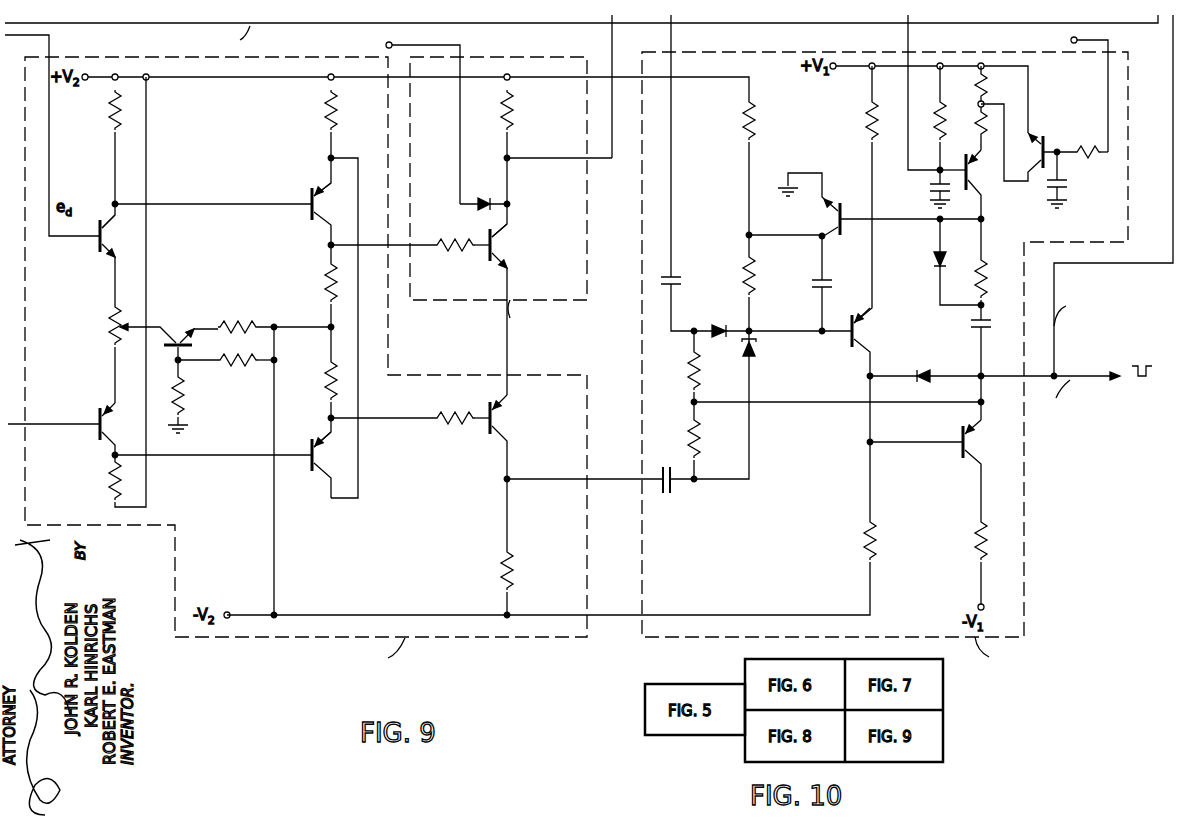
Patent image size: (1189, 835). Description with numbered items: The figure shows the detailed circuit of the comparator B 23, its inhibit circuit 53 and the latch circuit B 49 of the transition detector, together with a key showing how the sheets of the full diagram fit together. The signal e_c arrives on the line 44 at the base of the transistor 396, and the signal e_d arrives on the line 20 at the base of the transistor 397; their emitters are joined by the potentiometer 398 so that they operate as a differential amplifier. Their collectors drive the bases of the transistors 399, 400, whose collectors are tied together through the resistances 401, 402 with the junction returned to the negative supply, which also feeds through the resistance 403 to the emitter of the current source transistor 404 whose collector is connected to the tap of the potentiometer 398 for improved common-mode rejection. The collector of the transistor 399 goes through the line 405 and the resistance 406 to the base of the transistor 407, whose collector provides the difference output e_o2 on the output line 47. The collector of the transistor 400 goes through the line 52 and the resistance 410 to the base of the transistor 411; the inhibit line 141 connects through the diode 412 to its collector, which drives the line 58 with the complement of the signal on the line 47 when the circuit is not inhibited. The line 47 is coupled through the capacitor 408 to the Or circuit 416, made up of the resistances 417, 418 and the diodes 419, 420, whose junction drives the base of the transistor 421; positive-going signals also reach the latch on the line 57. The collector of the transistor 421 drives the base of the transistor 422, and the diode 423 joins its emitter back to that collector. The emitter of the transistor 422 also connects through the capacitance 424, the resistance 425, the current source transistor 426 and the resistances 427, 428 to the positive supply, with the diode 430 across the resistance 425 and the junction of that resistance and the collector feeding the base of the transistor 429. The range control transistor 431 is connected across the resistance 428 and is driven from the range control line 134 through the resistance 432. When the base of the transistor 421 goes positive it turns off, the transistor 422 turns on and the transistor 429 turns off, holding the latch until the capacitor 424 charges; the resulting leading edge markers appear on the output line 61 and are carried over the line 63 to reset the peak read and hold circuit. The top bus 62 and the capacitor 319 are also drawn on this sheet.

The line 20 is at (49, 190).
The comparator 23 is at (166, 540).
The line 44 is at (62, 422).
The output line 47 is at (596, 479).
The latch circuit B 49 is at (1025, 616).
The line 52 is at (397, 244).
The inhibit circuit 53 is at (500, 201).
The line 57 is at (672, 244).
The line 58 is at (604, 160).
The output line 61 is at (1064, 384).
The top bus line 62 is at (780, 23).
The line 63 is at (1124, 268).
The range control line 134 is at (1112, 50).
The inhibit line 141 is at (445, 45).
The capacitor 319 is at (682, 280).
The transistor 396 is at (98, 440).
The transistor 397 is at (100, 254).
The potentiometer 398 is at (112, 328).
The transistor 399 is at (313, 441).
The transistor 400 is at (312, 186).
The resistance 401 is at (328, 369).
The resistance 402 is at (328, 274).
The resistance 403 is at (224, 324).
The current source transistor 404 is at (191, 345).
The line 405 is at (379, 417).
The resistance 406 is at (460, 434).
The transistor 407 is at (498, 409).
The capacitor 408 is at (668, 493).
The resistance 410 is at (446, 242).
The transistor 411 is at (493, 260).
The diode 412 is at (480, 200).
The Or circuit 416 is at (734, 374).
The resistance 417 is at (688, 380).
The resistance 418 is at (688, 429).
The diode 419 is at (716, 322).
The diode 420 is at (752, 356).
The transistor 421 is at (850, 344).
The transistor 422 is at (962, 428).
The diode 423 is at (922, 370).
The capacitance 424 is at (969, 324).
The resistance 425 is at (985, 286).
The current source transistor 426 is at (964, 158).
The resistance 427 is at (976, 112).
The resistance 428 is at (984, 94).
The transistor 429 is at (835, 196).
The diode 430 is at (935, 259).
The range control transistor 431 is at (1044, 140).
The resistance 432 is at (1078, 158).